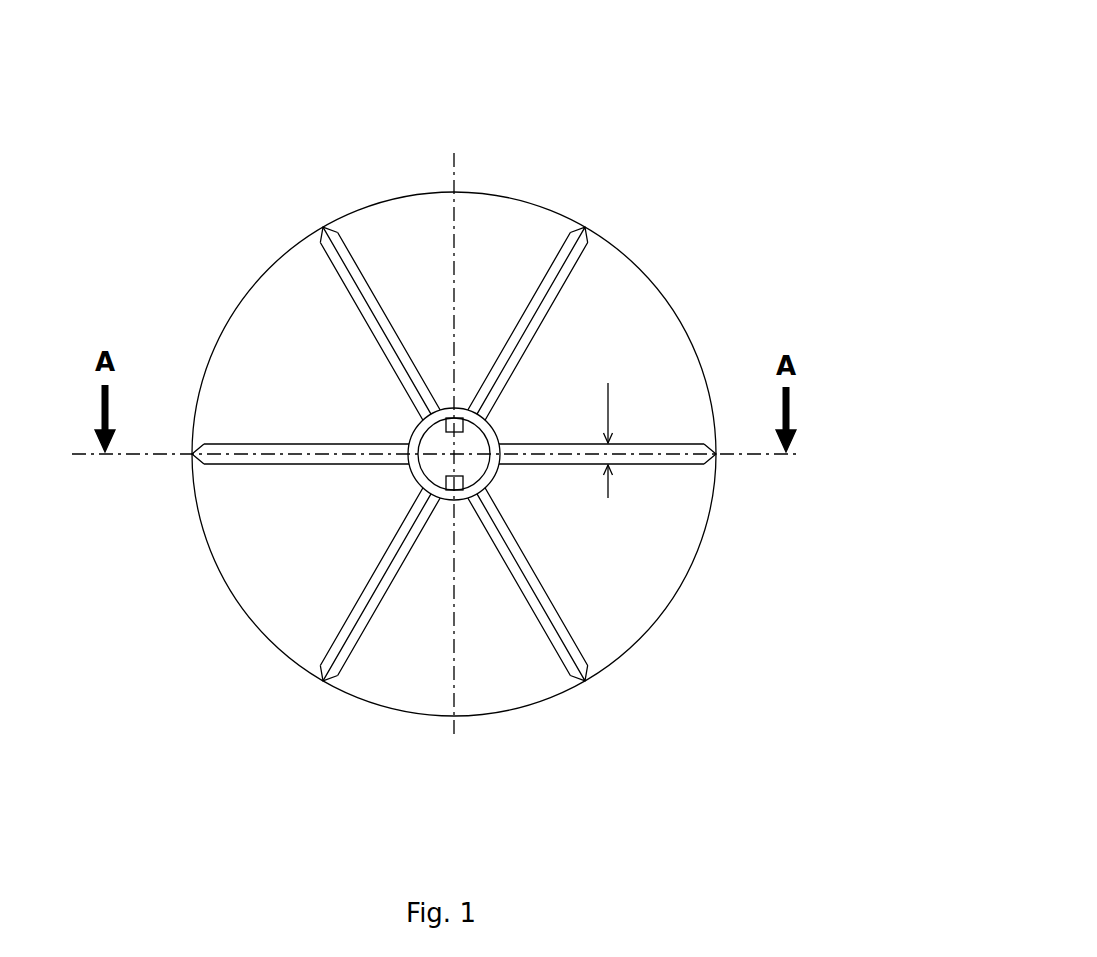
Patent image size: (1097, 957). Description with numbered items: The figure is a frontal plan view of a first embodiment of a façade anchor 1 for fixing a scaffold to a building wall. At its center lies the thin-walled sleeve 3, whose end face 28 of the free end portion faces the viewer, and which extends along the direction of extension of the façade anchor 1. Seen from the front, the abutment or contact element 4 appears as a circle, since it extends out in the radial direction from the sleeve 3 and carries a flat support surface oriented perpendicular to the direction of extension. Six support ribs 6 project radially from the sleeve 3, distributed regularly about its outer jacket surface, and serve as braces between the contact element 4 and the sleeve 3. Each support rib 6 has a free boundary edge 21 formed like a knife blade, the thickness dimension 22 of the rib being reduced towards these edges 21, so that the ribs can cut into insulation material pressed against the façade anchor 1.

The façade anchor 1 is at (618, 69).
The sleeve 3 is at (409, 479).
The contact element 4 is at (678, 304).
The support ribs 6 is at (539, 281).
The free boundary edge 21 is at (349, 251).
The thickness dimension 22 is at (615, 412).
The end face 28 is at (493, 432).